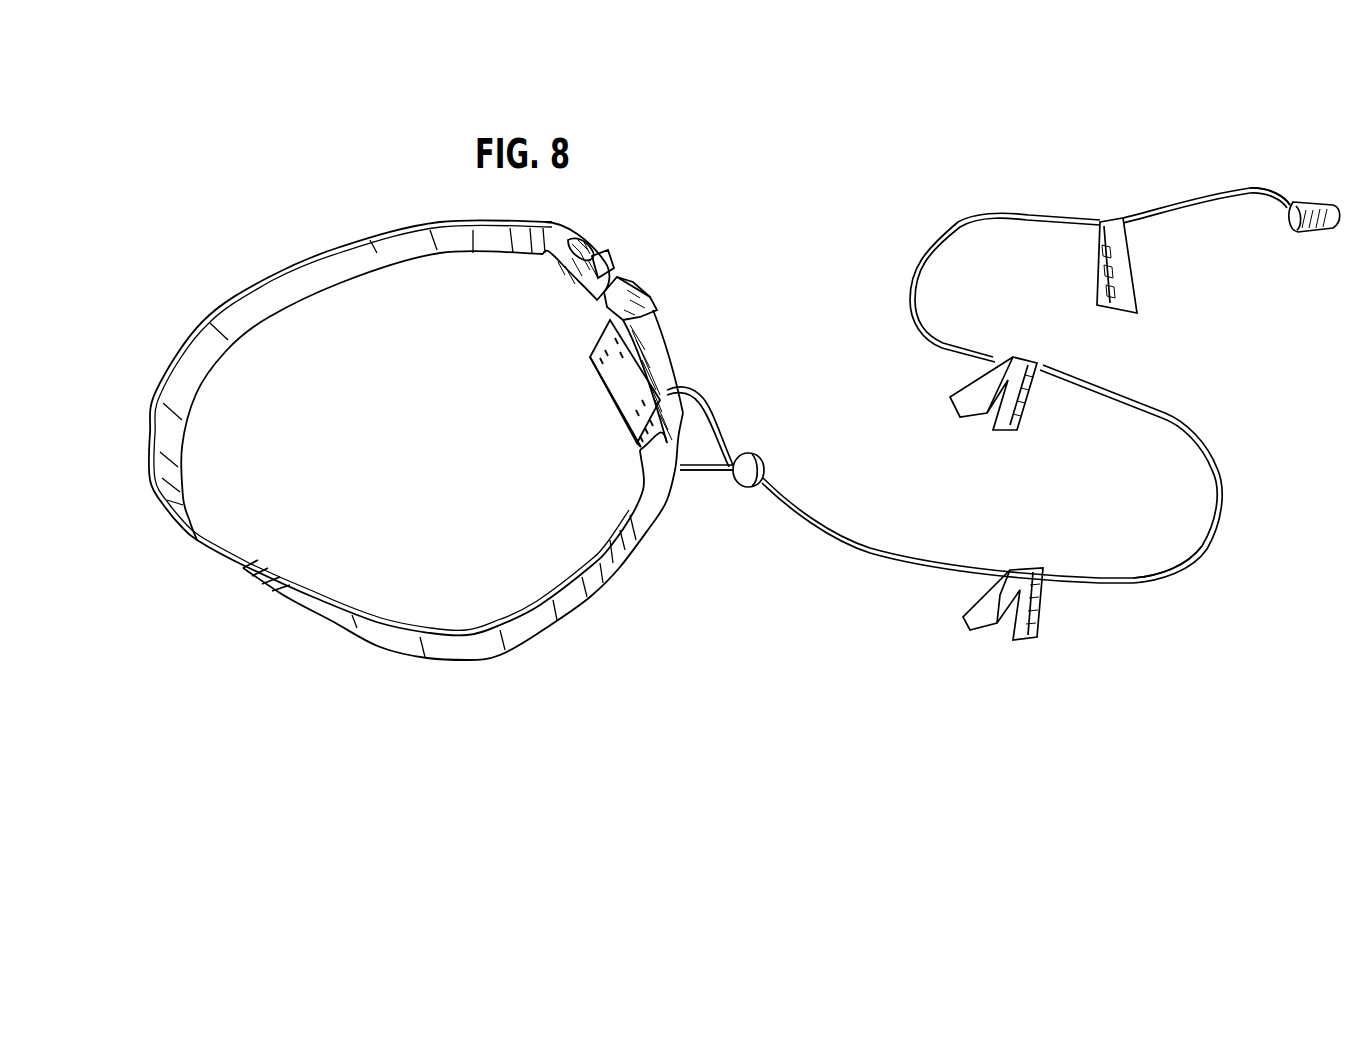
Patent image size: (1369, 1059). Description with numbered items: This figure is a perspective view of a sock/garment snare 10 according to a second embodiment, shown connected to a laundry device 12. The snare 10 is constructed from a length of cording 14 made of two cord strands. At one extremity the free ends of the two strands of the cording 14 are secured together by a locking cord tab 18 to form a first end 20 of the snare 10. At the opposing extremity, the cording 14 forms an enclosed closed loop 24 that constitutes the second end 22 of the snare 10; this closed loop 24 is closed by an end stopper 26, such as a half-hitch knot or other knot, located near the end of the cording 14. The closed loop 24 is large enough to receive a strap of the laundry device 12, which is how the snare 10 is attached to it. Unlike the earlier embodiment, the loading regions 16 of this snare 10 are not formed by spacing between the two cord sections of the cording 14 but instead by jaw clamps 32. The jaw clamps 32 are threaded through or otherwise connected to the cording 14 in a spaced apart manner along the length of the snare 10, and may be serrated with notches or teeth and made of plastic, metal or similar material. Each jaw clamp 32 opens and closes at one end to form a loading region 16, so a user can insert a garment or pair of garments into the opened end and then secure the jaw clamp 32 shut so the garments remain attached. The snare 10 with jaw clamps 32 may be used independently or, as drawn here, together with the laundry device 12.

The sock/garment snare 10 is at (1163, 635).
The laundry device 12 is at (362, 678).
The cording 14 is at (920, 262).
The loading region 16 is at (970, 424).
The locking cord tab 18 is at (1300, 232).
The first end 20 is at (1298, 165).
The second end 22 is at (717, 415).
The closed loop 24 is at (703, 450).
The end stopper 26 is at (766, 461).
The jaw clamp 32 is at (1120, 265).